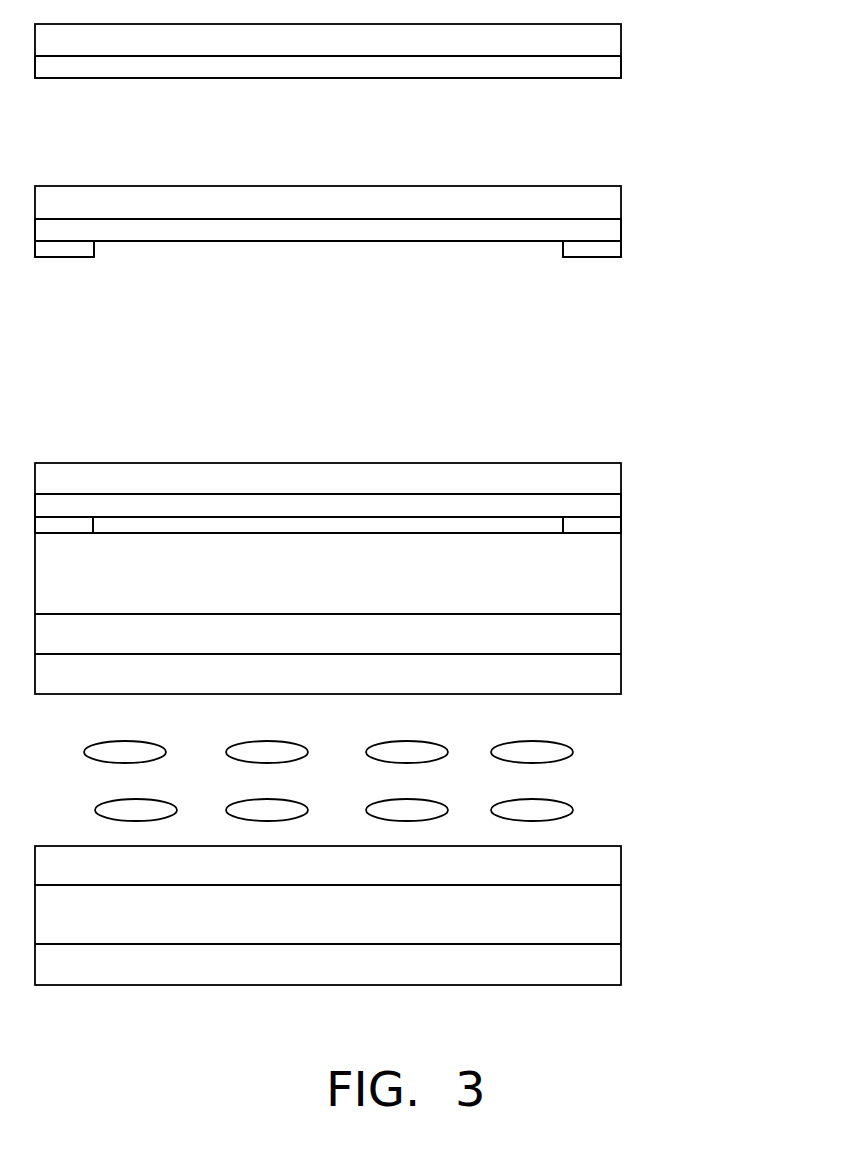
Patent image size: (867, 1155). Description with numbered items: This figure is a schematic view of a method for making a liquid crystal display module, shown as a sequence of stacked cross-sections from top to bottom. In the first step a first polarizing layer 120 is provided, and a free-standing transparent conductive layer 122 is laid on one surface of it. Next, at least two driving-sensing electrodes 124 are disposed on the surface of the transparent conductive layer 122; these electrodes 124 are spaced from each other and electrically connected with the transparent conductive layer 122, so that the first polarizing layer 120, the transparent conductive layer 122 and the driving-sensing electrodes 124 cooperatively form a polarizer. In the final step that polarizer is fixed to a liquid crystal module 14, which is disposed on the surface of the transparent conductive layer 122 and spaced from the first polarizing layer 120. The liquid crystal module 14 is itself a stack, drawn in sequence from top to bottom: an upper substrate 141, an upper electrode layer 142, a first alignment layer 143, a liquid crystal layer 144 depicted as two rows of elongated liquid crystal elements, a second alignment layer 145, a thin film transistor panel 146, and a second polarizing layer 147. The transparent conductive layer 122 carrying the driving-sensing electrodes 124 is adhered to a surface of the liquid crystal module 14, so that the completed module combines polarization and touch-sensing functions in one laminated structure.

The first polarizing layer 120 is at (607, 41).
The transparent conductive layer 122 is at (328, 286).
The driving-sensing electrodes 124 is at (328, 387).
The liquid crystal module 14 is at (413, 759).
The upper substrate 141 is at (595, 582).
The upper electrode layer 142 is at (598, 632).
The first alignment layer 143 is at (605, 677).
The liquid crystal layer 144 is at (565, 783).
The second alignment layer 145 is at (605, 868).
The thin film transistor panel 146 is at (602, 916).
The second polarizing layer 147 is at (376, 964).